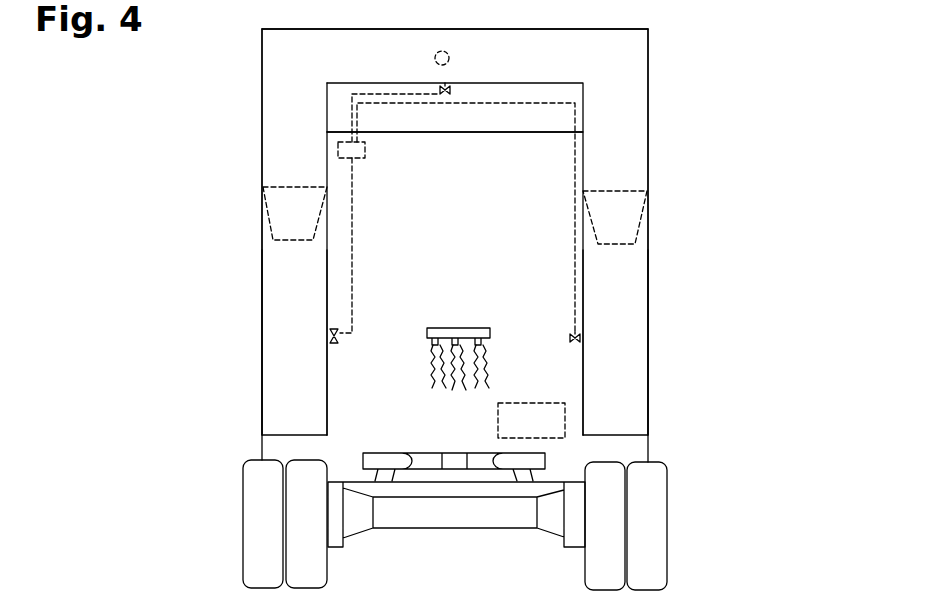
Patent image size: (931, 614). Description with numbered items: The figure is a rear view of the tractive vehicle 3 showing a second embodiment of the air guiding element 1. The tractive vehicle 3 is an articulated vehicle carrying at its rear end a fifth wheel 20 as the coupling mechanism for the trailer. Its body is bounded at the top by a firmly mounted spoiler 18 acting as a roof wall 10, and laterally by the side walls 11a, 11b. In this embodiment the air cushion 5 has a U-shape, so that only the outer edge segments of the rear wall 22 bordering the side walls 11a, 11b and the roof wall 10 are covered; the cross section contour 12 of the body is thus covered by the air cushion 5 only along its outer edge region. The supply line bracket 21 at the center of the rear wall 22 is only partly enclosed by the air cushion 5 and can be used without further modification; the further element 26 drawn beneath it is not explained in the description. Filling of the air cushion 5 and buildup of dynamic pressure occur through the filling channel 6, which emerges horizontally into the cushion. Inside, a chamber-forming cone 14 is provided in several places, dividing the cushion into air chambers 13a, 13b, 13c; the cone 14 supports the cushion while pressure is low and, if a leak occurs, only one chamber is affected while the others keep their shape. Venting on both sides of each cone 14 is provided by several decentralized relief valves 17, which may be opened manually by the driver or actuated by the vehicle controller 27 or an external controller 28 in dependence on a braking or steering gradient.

The air guiding element 1 is at (666, 156).
The tractive vehicle 3 is at (153, 338).
The air cushion 5 is at (277, 133).
The filling channel 6 is at (449, 57).
The roof wall 10 is at (537, 236).
The spoiler 18 is at (598, 30).
The side wall 11a is at (262, 278).
The side wall 11b is at (648, 285).
The cross section contour 12 is at (303, 29).
The air chamber 13a is at (398, 70).
The air chamber 13b is at (313, 330).
The air chamber 13c is at (638, 331).
The chamber-forming cone 14 is at (287, 202).
The relief valve 17 is at (445, 94).
The fifth wheel 20 is at (538, 460).
The supply line bracket 21 is at (443, 328).
The rear wall 22 is at (405, 265).
The spray jets 26 is at (437, 383).
The vehicle controller 27 is at (565, 415).
The external controller 28 is at (365, 157).